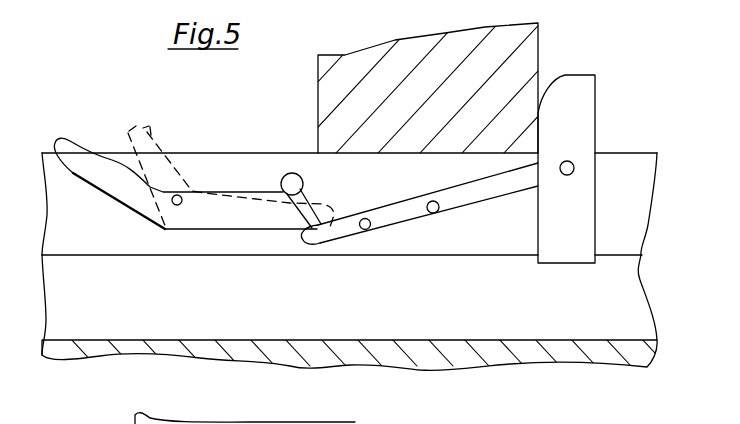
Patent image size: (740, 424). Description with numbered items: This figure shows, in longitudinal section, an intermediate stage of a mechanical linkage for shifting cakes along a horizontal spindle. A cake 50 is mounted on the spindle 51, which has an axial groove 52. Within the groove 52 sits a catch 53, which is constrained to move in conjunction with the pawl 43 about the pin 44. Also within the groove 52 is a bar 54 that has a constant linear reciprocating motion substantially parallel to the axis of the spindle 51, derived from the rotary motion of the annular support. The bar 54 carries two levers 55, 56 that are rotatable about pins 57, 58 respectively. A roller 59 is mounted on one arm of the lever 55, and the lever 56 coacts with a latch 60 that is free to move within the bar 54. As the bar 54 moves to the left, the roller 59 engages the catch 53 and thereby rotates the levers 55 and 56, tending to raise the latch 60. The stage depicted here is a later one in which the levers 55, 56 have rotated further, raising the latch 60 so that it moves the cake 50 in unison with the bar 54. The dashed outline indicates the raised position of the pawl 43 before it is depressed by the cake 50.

The pawl 43 is at (227, 167).
The pin 44 is at (182, 196).
The cake 50 is at (532, 32).
The spindle 51 is at (562, 360).
The axial groove 52 is at (638, 310).
The catch 53 is at (68, 150).
The bar 54 is at (642, 203).
The lever 55 is at (349, 231).
The lever 56 is at (470, 197).
The pin 57 is at (303, 243).
The pin 58 is at (429, 201).
The roller 59 is at (287, 173).
The latch 60 is at (588, 115).